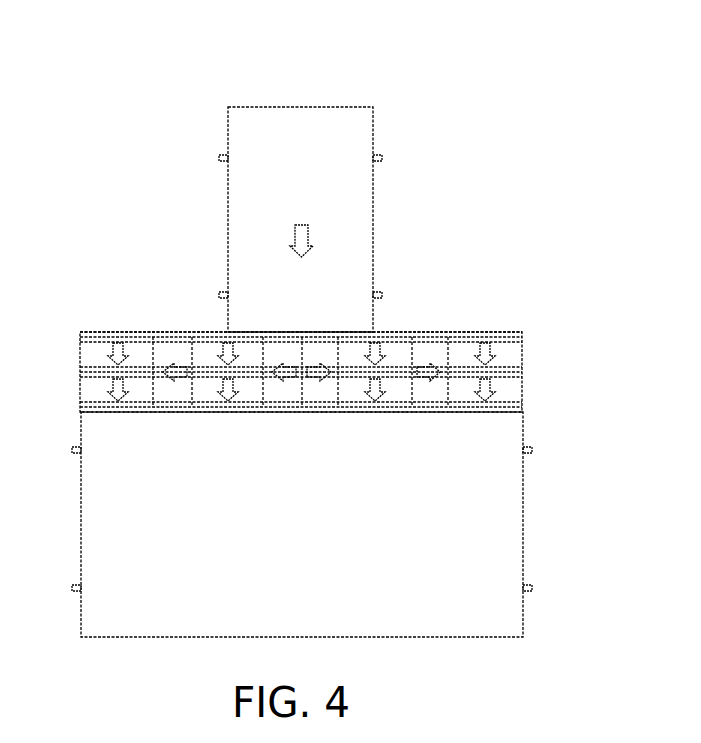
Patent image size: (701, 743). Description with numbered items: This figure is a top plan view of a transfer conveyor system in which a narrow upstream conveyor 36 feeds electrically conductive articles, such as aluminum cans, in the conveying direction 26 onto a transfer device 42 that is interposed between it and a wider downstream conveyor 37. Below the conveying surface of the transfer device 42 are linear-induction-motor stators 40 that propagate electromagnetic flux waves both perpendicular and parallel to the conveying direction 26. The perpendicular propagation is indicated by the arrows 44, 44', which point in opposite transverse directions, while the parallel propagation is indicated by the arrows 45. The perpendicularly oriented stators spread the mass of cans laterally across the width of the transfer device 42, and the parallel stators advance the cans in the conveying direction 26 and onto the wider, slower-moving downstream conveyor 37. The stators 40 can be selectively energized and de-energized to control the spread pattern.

The conveying direction 26 is at (296, 229).
The upstream conveyor 36 is at (368, 222).
The downstream conveyor 37 is at (517, 537).
The LIM stators 40 is at (90, 354).
The transfer device 42 is at (524, 351).
The arrow (perpendicular flux-wave direction) 44 is at (452, 339).
The arrow (perpendicular flux-wave direction) 44' is at (150, 336).
The arrows (parallel flux-wave direction) 45 is at (115, 388).